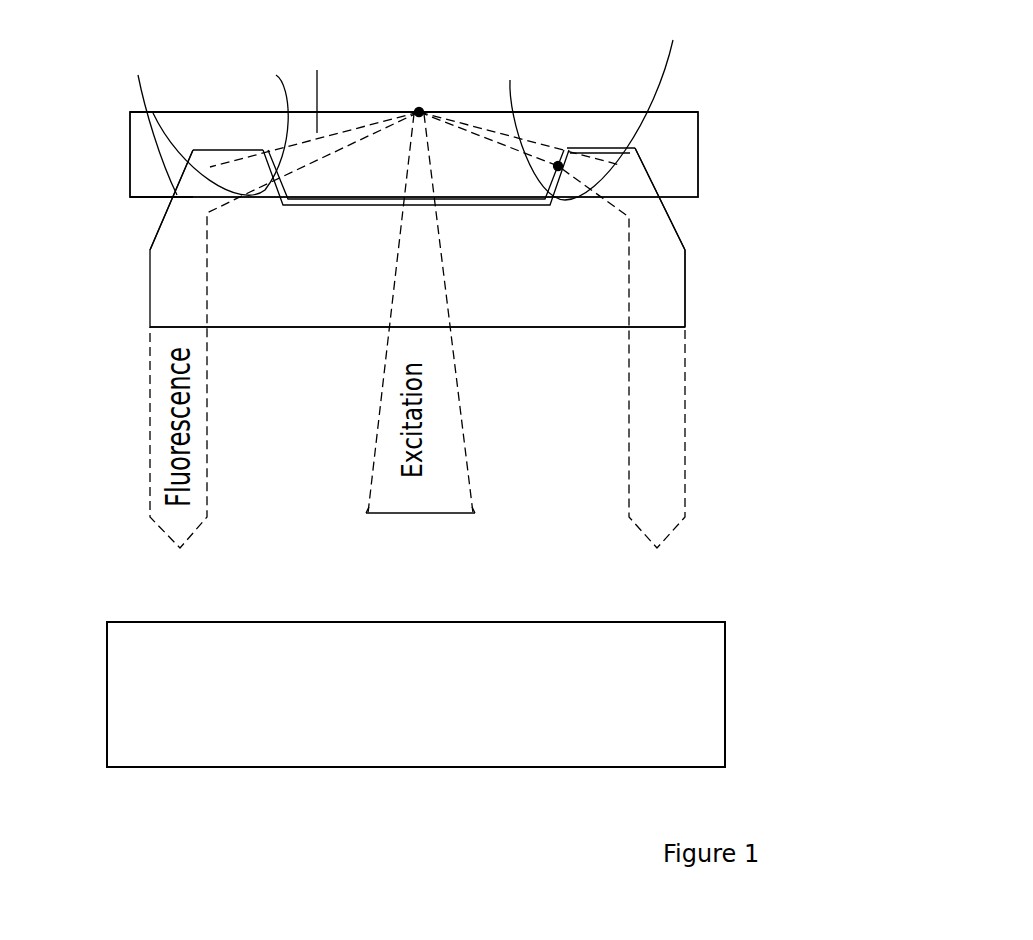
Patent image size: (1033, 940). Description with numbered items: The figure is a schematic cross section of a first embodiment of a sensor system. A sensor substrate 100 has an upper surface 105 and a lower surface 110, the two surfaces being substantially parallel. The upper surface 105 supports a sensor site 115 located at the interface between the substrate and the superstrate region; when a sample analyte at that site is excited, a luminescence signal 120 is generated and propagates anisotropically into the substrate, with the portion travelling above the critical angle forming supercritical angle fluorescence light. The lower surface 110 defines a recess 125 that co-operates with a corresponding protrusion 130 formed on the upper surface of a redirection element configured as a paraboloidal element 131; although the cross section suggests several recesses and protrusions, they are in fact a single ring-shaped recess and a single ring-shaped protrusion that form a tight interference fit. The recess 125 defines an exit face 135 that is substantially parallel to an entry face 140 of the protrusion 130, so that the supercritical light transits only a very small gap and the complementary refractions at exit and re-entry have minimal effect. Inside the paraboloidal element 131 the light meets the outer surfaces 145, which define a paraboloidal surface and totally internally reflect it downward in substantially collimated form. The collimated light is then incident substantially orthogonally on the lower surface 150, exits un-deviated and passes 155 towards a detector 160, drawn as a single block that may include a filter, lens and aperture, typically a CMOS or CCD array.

The sensor substrate 100 is at (700, 160).
The upper surface 105 is at (669, 112).
The lower surface 110 is at (148, 198).
The sensor site 115 is at (404, 103).
The luminescence signal 120 is at (311, 83).
The recess 125 is at (176, 196).
The protrusion 130 is at (227, 148).
The paraboloidal element 131 is at (650, 283).
The exit face 135 is at (413, 120).
The entry face 140 is at (406, 101).
The outer surfaces 145 is at (677, 232).
The lower surface of the paraboloidal element 150 is at (502, 328).
The light passing towards detector 155 is at (698, 400).
The detector 160 is at (725, 690).